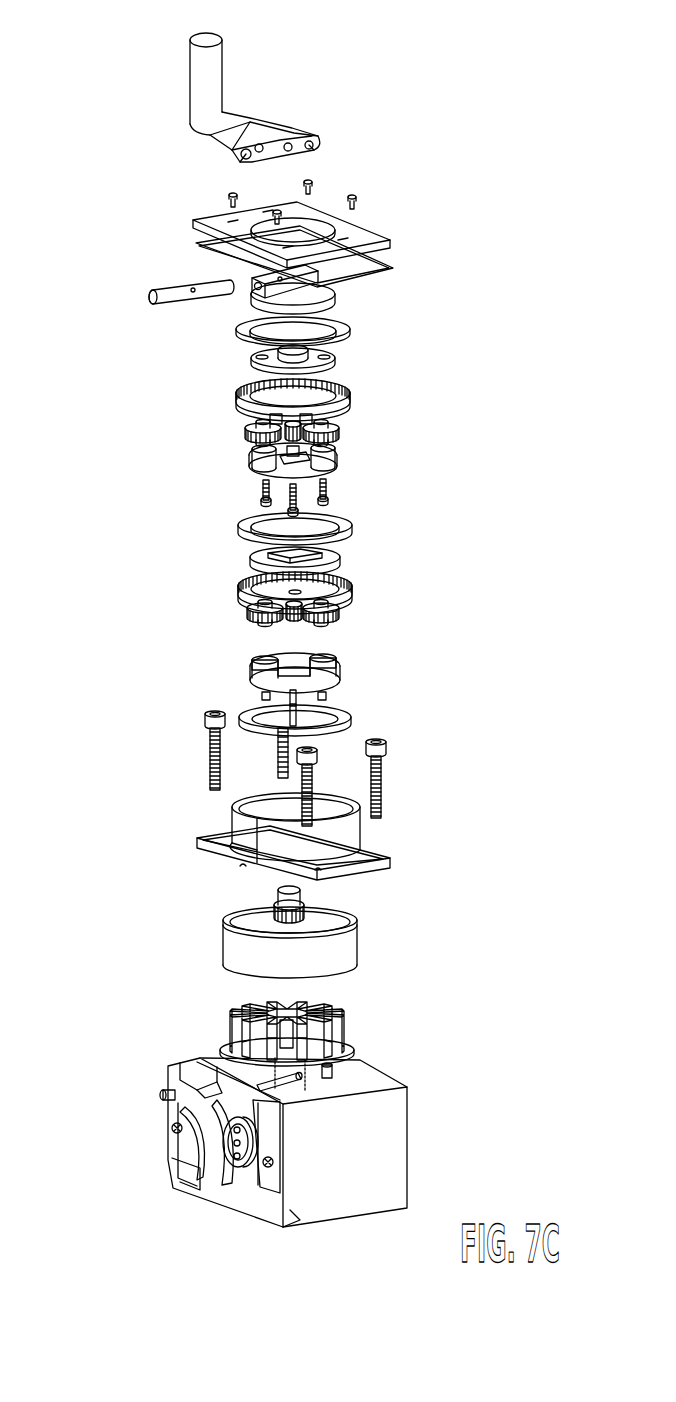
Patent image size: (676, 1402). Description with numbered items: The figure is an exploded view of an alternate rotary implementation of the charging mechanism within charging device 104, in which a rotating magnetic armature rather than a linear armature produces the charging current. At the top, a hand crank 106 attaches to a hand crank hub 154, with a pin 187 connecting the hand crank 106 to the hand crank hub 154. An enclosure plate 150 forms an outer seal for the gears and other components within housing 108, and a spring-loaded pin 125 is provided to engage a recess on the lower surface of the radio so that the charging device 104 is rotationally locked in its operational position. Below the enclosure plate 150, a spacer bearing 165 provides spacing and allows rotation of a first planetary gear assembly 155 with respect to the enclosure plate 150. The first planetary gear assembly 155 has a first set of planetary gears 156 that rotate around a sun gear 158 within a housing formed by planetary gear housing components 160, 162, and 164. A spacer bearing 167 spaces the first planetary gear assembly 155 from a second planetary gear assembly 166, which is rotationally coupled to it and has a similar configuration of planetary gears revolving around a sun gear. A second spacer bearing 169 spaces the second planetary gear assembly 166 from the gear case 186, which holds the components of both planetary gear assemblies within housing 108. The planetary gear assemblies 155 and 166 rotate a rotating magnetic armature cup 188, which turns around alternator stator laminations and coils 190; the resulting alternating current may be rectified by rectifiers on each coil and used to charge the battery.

The charging device 104 is at (155, 99).
The hand crank 106 is at (215, 58).
The housing 108 is at (390, 1148).
The spring-loaded pin 125 is at (397, 268).
The enclosure plate 150 is at (375, 232).
The hand crank hub 154 is at (337, 297).
The first planetary gear assembly 155 is at (348, 343).
The first set of planetary gears 156 is at (243, 431).
The sun gear 158 is at (298, 450).
The planetary gear housing component 160 is at (252, 455).
The planetary gear housing component 162 is at (237, 397).
The planetary gear housing component 164 is at (253, 358).
The spacer bearing 165 is at (240, 330).
The second planetary gear assembly 166 is at (348, 550).
The spacer bearing 167 is at (245, 538).
The second spacer bearing 169 is at (245, 717).
The gear case 186 is at (240, 823).
The pin 187 is at (150, 298).
The rotating magnetic armature cup 188 is at (348, 950).
The alternator stator laminations and coils 190 is at (237, 1040).